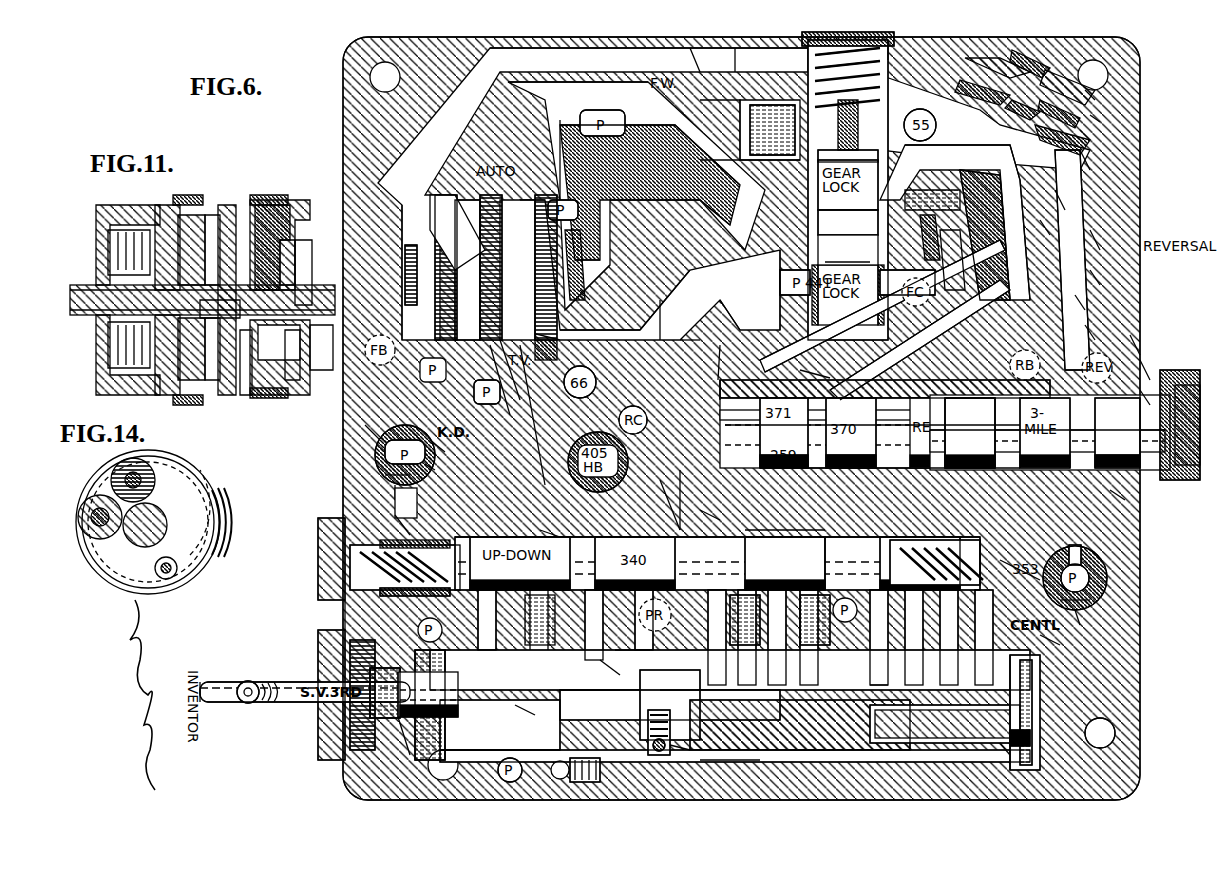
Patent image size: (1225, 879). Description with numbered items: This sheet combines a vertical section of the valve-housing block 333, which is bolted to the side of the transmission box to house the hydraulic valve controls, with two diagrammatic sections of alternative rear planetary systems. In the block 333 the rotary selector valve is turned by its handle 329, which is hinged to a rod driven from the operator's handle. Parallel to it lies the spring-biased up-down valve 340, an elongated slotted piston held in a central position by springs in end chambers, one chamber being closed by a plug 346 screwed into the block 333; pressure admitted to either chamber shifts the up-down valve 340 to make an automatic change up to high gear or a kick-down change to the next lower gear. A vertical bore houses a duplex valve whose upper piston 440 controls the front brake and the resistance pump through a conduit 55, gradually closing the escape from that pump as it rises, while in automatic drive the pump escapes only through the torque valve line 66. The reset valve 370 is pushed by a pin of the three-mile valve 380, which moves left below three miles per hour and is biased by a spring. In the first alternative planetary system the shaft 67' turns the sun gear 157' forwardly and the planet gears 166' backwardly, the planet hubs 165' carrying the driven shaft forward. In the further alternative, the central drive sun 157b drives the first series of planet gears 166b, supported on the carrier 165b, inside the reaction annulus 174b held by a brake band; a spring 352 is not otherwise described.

In FIG. 6, the block 333 is at (430, 70).
In FIG. 6, the up-down valve 340 is at (717, 563).
In FIG. 6, the reset valve 370 is at (872, 429).
In FIG. 6, the piston of duplex valve 440 is at (850, 208).
In FIG. 6, the 3-mile valve 380 is at (1117, 433).
In FIG. 6, the handle 329 is at (300, 682).
In FIG. 6, the plug 346 is at (350, 560).
In FIG. 6, the valve spring 352 is at (935, 540).
In FIG. 6, the conduit 55 is at (920, 125).
In FIG. 6, the torque valve line 66 is at (580, 382).
In FIG. 11, the shaft 67' is at (197, 314).
In FIG. 11, the planet gears 166' is at (149, 288).
In FIG. 11, the planet hubs 165' is at (204, 278).
In FIG. 11, the sun gear 157' is at (225, 309).
In FIG. 14, the carrier 165b is at (108, 487).
In FIG. 14, the first series of planet gears 166b is at (155, 500).
In FIG. 14, the central drive sun 157b is at (168, 522).
In FIG. 14, the annulus 174b is at (115, 585).